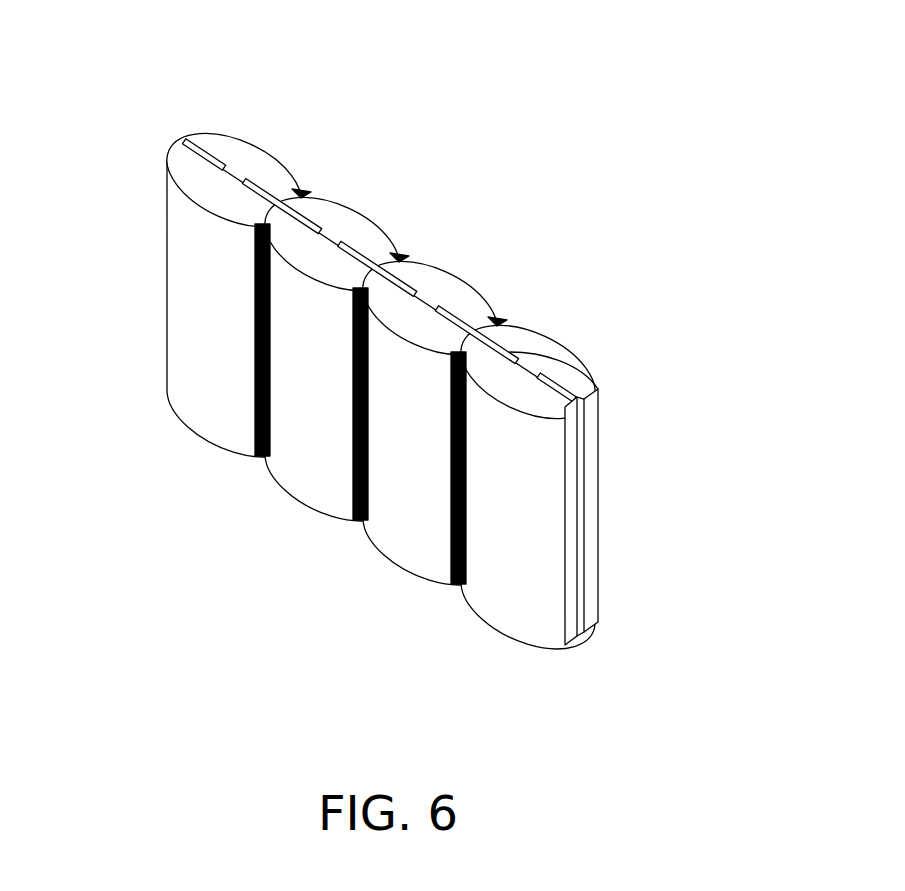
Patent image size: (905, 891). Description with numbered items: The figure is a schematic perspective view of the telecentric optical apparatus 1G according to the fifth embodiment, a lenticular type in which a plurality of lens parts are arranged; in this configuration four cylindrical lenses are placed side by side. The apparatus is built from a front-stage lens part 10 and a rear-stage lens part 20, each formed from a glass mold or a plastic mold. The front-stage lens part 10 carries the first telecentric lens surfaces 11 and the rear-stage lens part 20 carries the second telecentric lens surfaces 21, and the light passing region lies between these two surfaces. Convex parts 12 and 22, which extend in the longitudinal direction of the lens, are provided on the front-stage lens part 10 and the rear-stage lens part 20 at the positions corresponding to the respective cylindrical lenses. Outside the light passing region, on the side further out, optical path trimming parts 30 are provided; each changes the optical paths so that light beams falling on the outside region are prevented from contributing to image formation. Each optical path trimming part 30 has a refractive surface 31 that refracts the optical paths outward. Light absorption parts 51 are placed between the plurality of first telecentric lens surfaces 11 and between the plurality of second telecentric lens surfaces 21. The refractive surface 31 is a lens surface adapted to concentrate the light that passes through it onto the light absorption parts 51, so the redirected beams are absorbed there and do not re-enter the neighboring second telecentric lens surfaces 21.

The telecentric optical apparatus 1G is at (387, 367).
The front-stage lens part 10 is at (387, 389).
The first telecentric lens surface 11 is at (202, 365).
The convex part 12 is at (225, 182).
The rear-stage lens part 20 is at (368, 222).
The second telecentric lens surface 21 is at (401, 262).
The convex part 22 is at (243, 173).
The optical path trimming part 30 is at (578, 498).
The refractive surface 31 is at (589, 370).
The light absorption part 51 is at (300, 193).